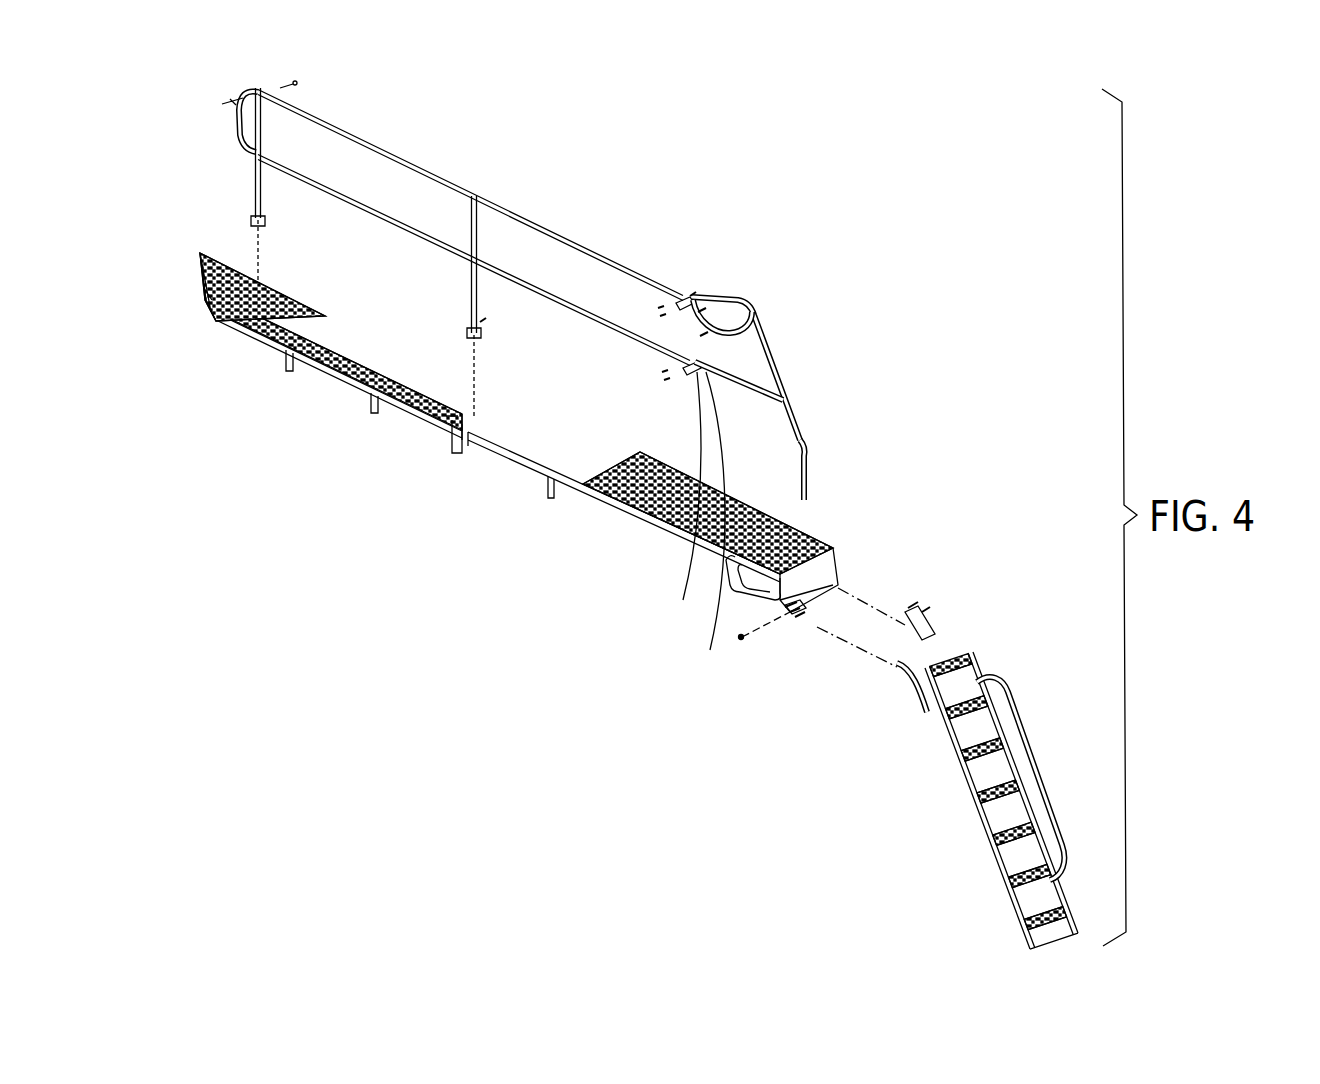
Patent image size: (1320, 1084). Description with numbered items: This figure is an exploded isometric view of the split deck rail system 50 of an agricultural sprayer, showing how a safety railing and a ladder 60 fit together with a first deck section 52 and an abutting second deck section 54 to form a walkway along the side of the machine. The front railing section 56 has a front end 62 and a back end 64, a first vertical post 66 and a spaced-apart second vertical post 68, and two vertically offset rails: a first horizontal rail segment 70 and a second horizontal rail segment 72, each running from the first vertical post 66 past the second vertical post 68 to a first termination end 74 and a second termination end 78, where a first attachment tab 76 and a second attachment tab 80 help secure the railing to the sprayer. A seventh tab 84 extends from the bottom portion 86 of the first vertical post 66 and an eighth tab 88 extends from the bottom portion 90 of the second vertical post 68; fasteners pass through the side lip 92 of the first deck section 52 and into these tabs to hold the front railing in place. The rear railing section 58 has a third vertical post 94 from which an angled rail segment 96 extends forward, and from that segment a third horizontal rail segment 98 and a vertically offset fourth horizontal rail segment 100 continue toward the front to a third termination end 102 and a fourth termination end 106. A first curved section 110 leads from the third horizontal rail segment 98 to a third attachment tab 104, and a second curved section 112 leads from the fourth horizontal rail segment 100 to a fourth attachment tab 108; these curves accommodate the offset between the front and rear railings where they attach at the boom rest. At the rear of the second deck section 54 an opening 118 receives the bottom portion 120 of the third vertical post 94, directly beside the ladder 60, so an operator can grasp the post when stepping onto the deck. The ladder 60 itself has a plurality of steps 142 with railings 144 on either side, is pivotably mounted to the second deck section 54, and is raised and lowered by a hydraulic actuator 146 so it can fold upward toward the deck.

The split deck rail system 50 is at (383, 537).
The first deck section 52 is at (295, 382).
The second deck section 54 is at (655, 573).
The front railing section 56 is at (426, 150).
The rear railing section 58 is at (862, 380).
The ladder 60 is at (945, 816).
The front end 62 is at (256, 86).
The back end 64 is at (660, 265).
The first vertical post 66 is at (256, 200).
The second vertical post 68 is at (468, 302).
The first horizontal rail segment 70 is at (316, 112).
The second horizontal rail segment 72 is at (294, 176).
The first termination end 74 is at (683, 292).
The first attachment tab 76 is at (676, 320).
The second termination end 78 is at (694, 392).
The second attachment tab 80 is at (688, 380).
The seventh tab 84 is at (264, 222).
The bottom portion 86 is at (230, 212).
The eighth tab 88 is at (462, 336).
The bottom portion 90 is at (492, 346).
The side lip 92 is at (282, 352).
The third vertical post 94 is at (810, 480).
The angled rail segment 96 is at (776, 382).
The third horizontal rail segment 98 is at (726, 291).
The fourth horizontal rail segment 100 is at (748, 388).
The third termination end 102 is at (703, 336).
The third attachment tab 104 is at (694, 294).
The fourth termination end 106 is at (678, 360).
The fourth attachment tab 108 is at (679, 501).
The first curved section 110 is at (701, 311).
The second curved section 112 is at (711, 525).
The opening 118 is at (796, 614).
The bottom portion 120 is at (815, 494).
The steps 142 is at (973, 658).
The railings 144 is at (1040, 792).
The hydraulic actuator 146 is at (922, 628).